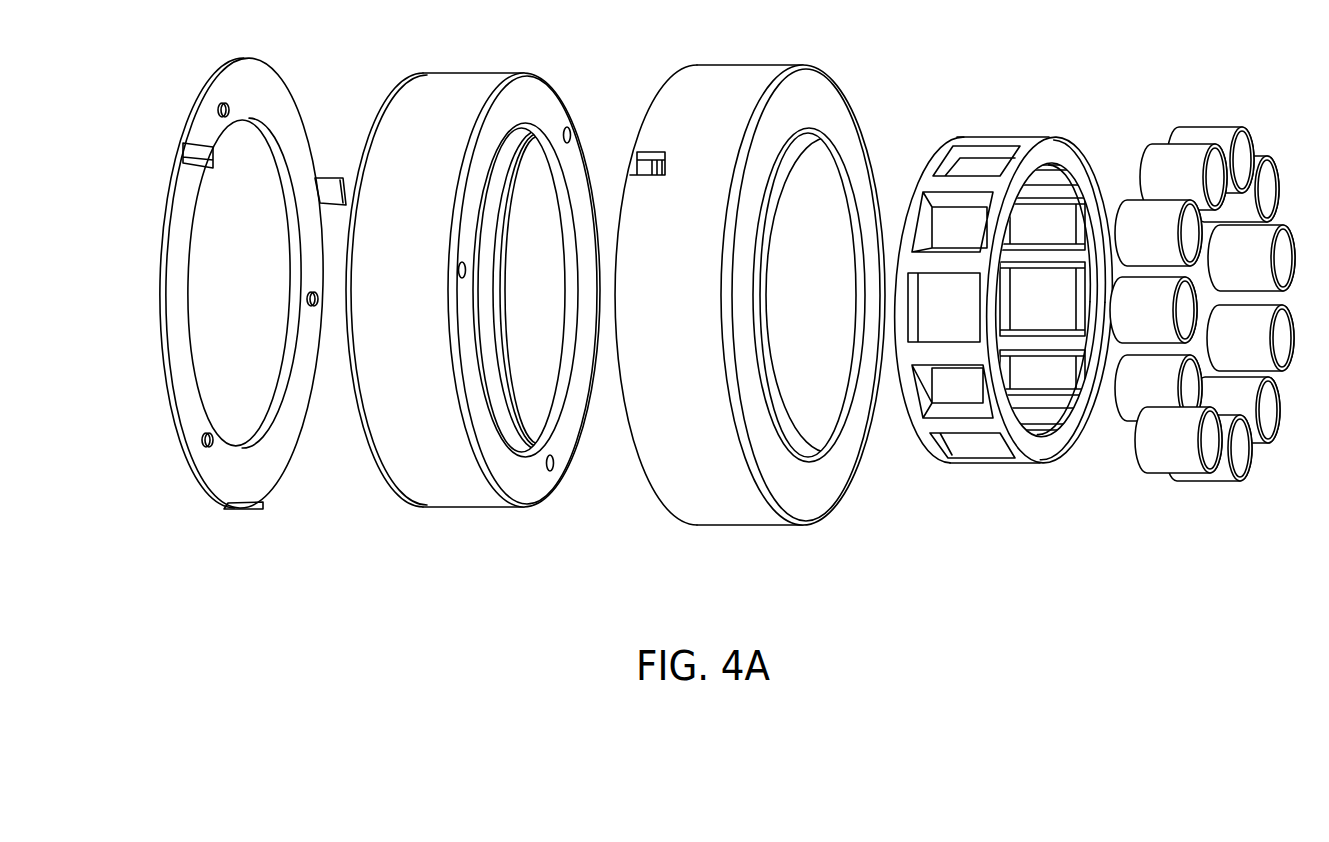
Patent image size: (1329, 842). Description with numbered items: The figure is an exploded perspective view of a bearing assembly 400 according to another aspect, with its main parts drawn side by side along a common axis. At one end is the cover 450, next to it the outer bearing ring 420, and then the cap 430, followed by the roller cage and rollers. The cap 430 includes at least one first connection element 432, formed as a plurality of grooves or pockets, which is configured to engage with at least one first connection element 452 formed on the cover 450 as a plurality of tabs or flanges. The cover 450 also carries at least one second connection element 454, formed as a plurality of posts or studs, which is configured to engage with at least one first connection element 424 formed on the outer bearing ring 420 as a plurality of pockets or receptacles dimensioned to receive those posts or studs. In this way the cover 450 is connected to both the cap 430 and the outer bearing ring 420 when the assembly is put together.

The bearing assembly 400 is at (718, 316).
The outer bearing ring 420 is at (473, 279).
The first connection element 424 is at (551, 472).
The cap 430 is at (764, 295).
The first connection element 432 is at (655, 152).
The cover 450 is at (244, 296).
The first connection element 452 is at (256, 511).
The second connection element 454 is at (218, 107).